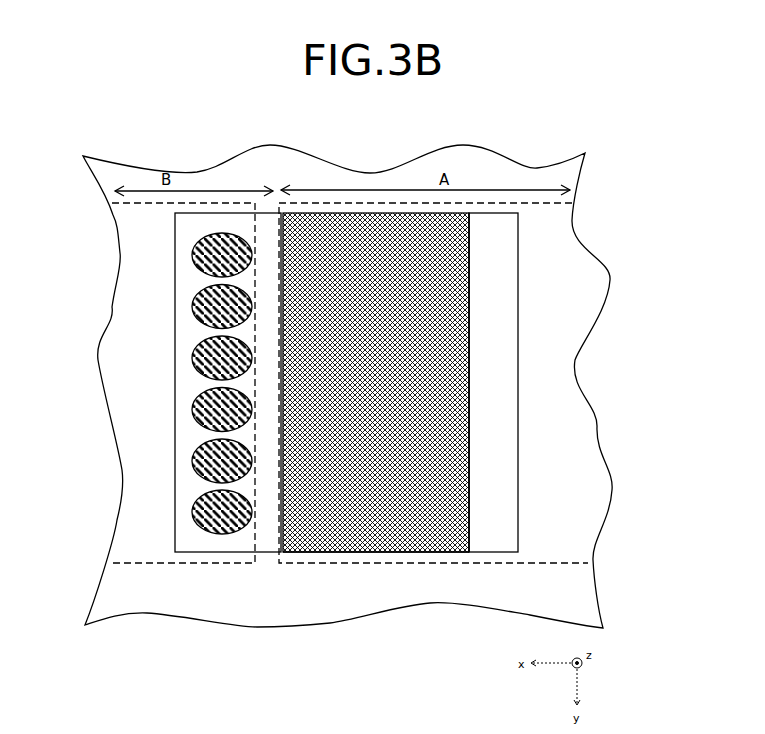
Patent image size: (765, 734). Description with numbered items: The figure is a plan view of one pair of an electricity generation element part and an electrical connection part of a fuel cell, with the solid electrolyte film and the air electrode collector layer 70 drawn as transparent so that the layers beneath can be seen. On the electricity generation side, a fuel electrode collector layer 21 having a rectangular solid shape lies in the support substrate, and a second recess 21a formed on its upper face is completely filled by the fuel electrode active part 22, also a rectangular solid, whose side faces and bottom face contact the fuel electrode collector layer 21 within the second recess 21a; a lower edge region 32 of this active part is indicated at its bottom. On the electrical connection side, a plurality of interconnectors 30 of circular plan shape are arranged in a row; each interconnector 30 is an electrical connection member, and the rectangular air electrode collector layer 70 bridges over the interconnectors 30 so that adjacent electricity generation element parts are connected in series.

The fuel electrode collector layer 21 is at (196, 444).
The second recess 21a is at (472, 535).
The fuel electrode active part 22 is at (376, 382).
The interconnector 30 is at (245, 530).
The lower surface of conductive layer 32 is at (342, 558).
The air electrode collector layer 70 is at (140, 567).